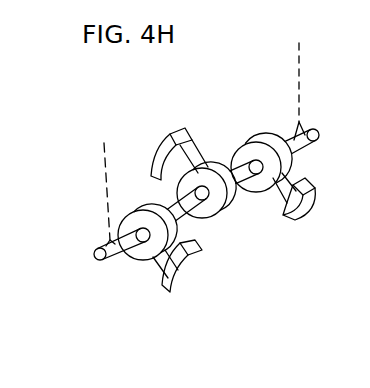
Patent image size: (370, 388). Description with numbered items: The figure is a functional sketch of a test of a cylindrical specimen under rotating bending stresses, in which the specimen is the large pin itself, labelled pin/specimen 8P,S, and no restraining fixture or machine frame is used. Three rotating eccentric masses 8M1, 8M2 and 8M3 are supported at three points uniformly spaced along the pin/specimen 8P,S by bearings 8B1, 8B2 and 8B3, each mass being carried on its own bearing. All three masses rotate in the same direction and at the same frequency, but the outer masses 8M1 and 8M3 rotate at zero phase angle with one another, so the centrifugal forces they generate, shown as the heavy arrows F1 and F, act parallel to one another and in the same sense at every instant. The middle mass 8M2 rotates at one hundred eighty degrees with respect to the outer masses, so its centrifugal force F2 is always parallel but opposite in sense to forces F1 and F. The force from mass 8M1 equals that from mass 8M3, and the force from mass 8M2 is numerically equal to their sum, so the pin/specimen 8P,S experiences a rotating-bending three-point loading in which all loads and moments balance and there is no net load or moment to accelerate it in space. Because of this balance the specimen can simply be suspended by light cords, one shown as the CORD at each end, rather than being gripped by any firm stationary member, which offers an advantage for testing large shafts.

The bearing 8B1 is at (135, 260).
The bearing 8B2 is at (225, 222).
The bearing 8B3 is at (263, 131).
The rotating eccentric mass 8M1 is at (167, 297).
The rotating eccentric mass 8M2 is at (175, 134).
The rotating eccentric mass 8M3 is at (315, 193).
The pin / test specimen 8P,S is at (93, 258).
The cord CORD is at (206, 144).
The centrifugal force F1 is at (188, 275).
The centrifugal force F2 is at (162, 147).
The centrifugal force F is at (307, 208).